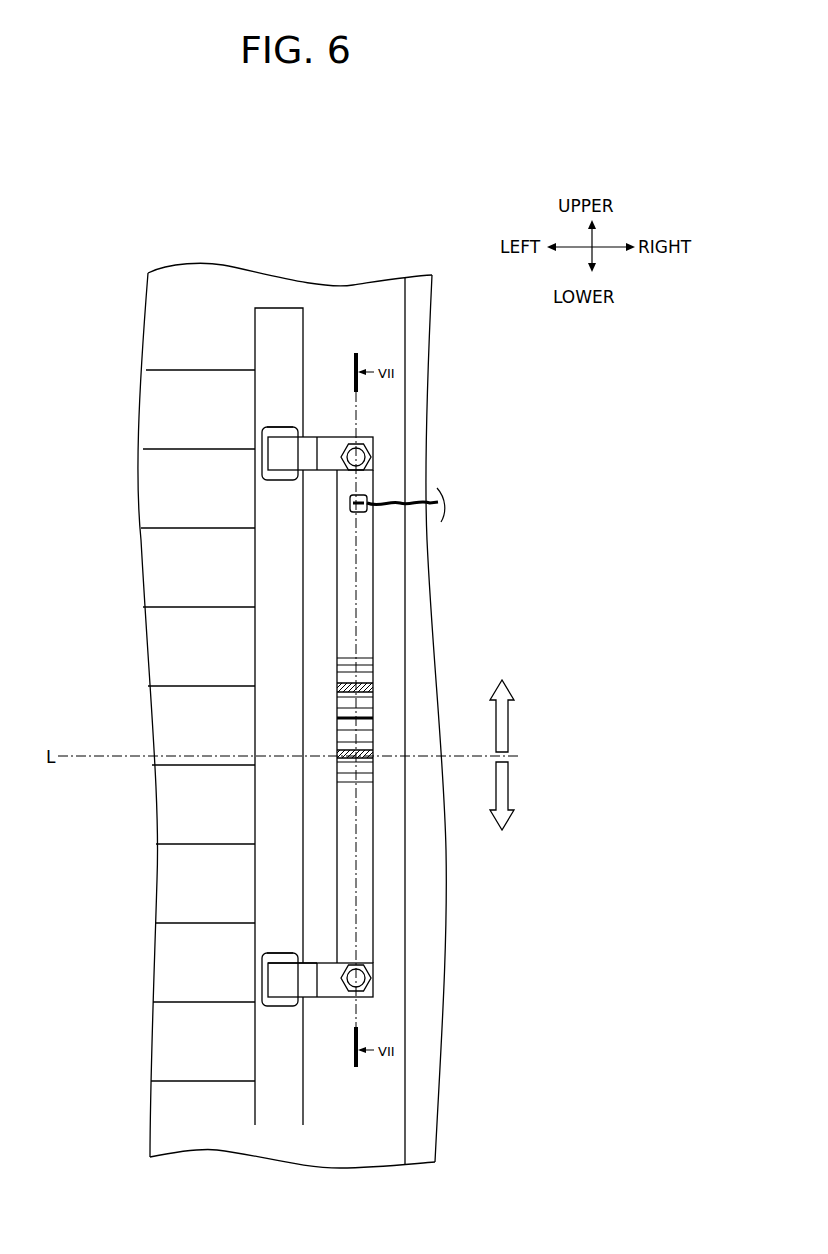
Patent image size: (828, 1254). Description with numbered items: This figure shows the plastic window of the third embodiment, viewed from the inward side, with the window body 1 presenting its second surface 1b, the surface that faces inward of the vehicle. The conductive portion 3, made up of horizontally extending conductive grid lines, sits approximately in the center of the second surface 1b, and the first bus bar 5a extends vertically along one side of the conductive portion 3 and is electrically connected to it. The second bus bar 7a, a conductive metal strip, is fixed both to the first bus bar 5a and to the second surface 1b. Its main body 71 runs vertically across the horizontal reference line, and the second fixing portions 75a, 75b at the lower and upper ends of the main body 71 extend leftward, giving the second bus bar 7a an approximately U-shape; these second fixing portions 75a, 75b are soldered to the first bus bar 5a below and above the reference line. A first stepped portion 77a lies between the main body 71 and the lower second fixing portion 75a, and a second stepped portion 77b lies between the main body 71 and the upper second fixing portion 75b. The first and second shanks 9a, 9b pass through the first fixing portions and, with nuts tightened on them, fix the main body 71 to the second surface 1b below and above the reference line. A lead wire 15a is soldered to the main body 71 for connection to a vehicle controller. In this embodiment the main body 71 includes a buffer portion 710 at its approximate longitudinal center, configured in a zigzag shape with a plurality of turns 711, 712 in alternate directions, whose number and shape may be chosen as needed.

The window body 1 is at (412, 297).
The second surface 1b is at (375, 330).
The conductive portion 3 is at (172, 366).
The first bus bar 5a is at (279, 322).
The second bus bar 7a is at (333, 1008).
The first shank 9a is at (370, 975).
The second shank 9b is at (367, 453).
The lead wire 15a is at (393, 510).
The main body 71 is at (357, 638).
The second fixing portion 75a is at (281, 979).
The second fixing portion 75b is at (284, 458).
The first stepped portion 77a is at (310, 985).
The second stepped portion 77b is at (312, 452).
The buffer portion 710 is at (328, 688).
The turn 711 is at (362, 672).
The turn 712 is at (374, 717).